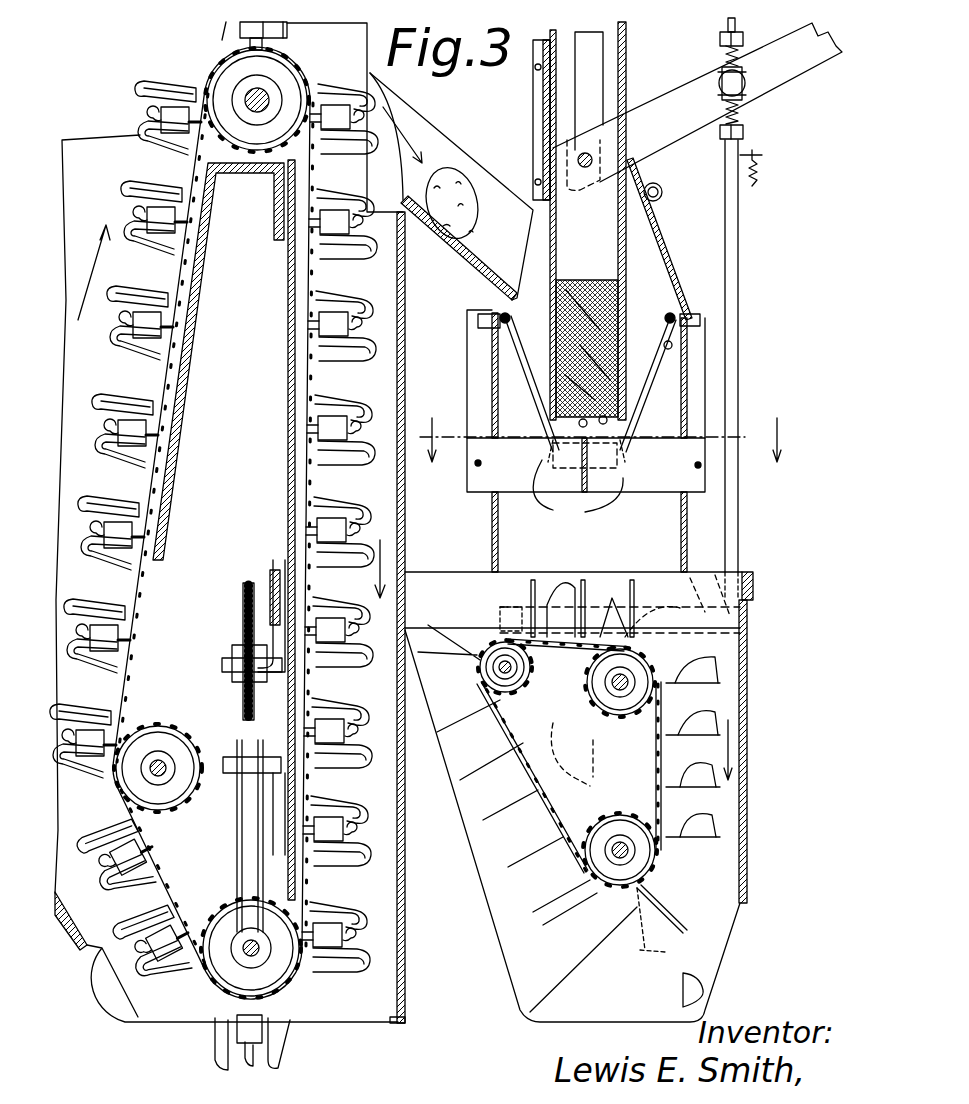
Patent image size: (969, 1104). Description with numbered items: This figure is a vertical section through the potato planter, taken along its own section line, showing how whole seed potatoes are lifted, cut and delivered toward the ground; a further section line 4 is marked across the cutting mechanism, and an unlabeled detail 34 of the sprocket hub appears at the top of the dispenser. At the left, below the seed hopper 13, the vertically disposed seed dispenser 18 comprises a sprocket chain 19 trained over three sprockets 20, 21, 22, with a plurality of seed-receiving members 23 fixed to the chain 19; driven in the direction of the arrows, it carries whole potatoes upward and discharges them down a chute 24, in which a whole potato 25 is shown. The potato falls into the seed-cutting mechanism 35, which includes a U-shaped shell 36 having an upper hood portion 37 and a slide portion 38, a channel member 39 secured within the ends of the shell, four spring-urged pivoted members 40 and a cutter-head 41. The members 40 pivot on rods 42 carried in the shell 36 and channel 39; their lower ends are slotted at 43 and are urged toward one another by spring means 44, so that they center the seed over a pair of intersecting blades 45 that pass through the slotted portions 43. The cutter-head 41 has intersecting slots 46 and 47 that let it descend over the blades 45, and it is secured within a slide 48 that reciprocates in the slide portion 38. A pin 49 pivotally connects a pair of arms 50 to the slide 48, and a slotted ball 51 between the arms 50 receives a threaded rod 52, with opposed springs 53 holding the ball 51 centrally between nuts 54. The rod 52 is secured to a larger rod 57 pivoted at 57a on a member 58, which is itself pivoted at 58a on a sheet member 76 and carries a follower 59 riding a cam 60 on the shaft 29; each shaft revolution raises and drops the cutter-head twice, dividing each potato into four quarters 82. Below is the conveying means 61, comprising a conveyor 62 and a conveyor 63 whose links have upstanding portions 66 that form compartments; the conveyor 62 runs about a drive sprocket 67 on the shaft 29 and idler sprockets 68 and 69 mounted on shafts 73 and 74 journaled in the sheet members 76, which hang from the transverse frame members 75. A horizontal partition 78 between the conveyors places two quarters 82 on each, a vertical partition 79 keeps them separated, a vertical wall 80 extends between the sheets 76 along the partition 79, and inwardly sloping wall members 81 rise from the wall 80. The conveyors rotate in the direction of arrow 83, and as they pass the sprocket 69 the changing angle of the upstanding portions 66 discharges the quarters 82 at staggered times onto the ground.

The seed hopper 13 is at (68, 150).
The seed dispenser 18 is at (140, 82).
The sprocket chain 19 is at (168, 378).
The sprocket 20 is at (160, 745).
The sprocket 21 is at (238, 150).
The sprocket 22 is at (226, 910).
The seed-receiving members 23 is at (95, 497).
The chute 24 is at (457, 257).
The whole potato 25 is at (463, 190).
The shaft 29 is at (622, 690).
The upper sprocket 34 is at (265, 95).
The seed-cutting mechanism 35 is at (675, 236).
The U-shaped shell 36 is at (688, 538).
The upper hood portion 37 is at (628, 280).
The slide portion 38 is at (626, 46).
The channel member 39 is at (492, 520).
The spring-urged pivoted members 40 is at (537, 367).
The cutter-head 41 is at (600, 300).
The rods 42 is at (500, 320).
The slotted portions 43 is at (545, 450).
The spring means 44 is at (673, 346).
The intersecting blades 45 is at (586, 482).
The intersecting slot 46 is at (607, 422).
The intersecting slot 47 is at (580, 425).
The slide 48 is at (645, 230).
The pin 49 is at (585, 152).
The arms 50 is at (658, 108).
The slotted ball 51 is at (744, 81).
The threaded rod 52 is at (722, 78).
The opposed springs 53 is at (726, 57).
The nuts 54 is at (720, 44).
The larger rod 57 is at (745, 309).
The pivot 57a is at (705, 595).
The member 58 is at (745, 648).
The pivot 58a is at (510, 606).
The follower 59 is at (618, 592).
The cam 60 is at (668, 586).
The conveying means 61 is at (760, 750).
The conveyor 62 is at (678, 912).
The conveyor 63 is at (633, 958).
The upstanding body portion 66 is at (490, 762).
The sprocket 67 is at (593, 670).
The idler sprocket 68 is at (507, 690).
The idler sprocket 69 is at (608, 816).
The shaft 73 is at (516, 670).
The shaft 74 is at (636, 808).
The transverse frame members 75 is at (420, 572).
The sheet members 76 is at (503, 925).
The horizontal partition 78 is at (545, 592).
The vertical partition 79 is at (722, 803).
The vertical wall 80 is at (748, 838).
The inwardly sloping wall members 81 is at (714, 590).
The quarters 82 is at (583, 586).
The arrow 83 is at (748, 718).
The section line 4 is at (602, 440).